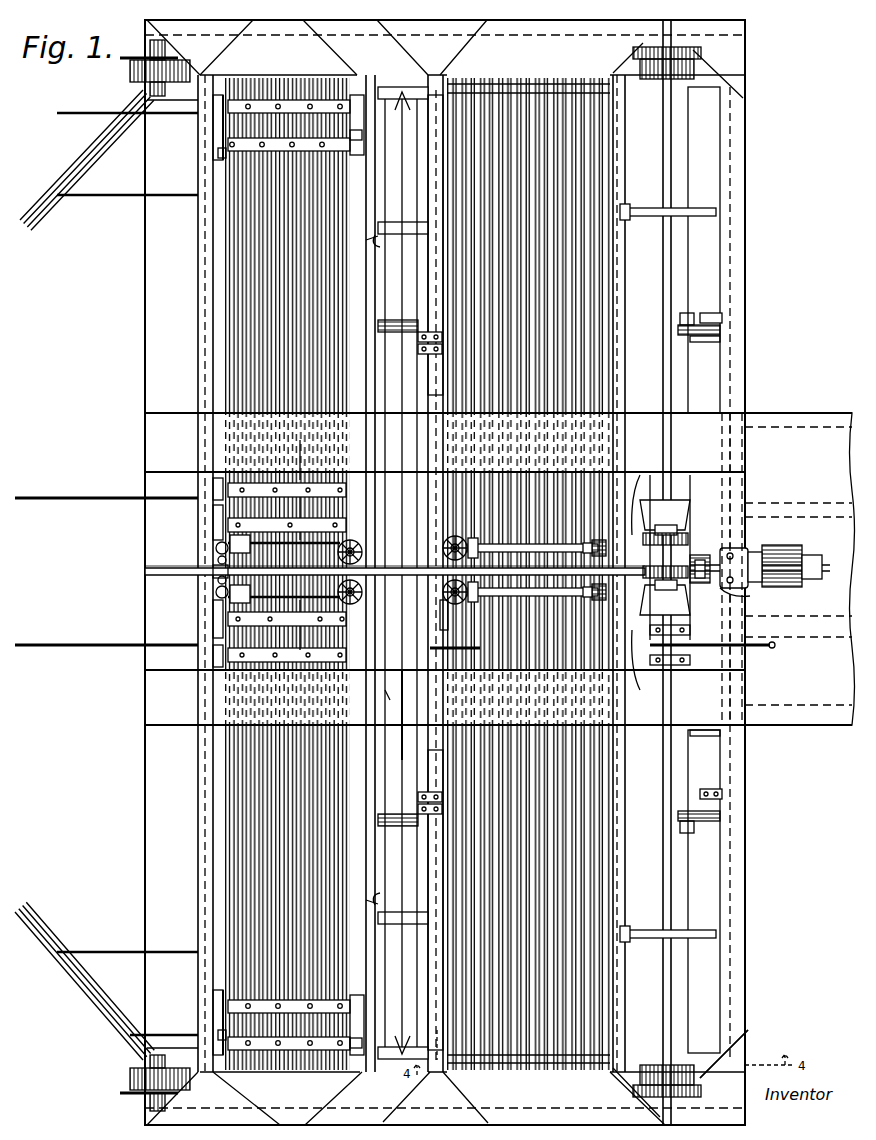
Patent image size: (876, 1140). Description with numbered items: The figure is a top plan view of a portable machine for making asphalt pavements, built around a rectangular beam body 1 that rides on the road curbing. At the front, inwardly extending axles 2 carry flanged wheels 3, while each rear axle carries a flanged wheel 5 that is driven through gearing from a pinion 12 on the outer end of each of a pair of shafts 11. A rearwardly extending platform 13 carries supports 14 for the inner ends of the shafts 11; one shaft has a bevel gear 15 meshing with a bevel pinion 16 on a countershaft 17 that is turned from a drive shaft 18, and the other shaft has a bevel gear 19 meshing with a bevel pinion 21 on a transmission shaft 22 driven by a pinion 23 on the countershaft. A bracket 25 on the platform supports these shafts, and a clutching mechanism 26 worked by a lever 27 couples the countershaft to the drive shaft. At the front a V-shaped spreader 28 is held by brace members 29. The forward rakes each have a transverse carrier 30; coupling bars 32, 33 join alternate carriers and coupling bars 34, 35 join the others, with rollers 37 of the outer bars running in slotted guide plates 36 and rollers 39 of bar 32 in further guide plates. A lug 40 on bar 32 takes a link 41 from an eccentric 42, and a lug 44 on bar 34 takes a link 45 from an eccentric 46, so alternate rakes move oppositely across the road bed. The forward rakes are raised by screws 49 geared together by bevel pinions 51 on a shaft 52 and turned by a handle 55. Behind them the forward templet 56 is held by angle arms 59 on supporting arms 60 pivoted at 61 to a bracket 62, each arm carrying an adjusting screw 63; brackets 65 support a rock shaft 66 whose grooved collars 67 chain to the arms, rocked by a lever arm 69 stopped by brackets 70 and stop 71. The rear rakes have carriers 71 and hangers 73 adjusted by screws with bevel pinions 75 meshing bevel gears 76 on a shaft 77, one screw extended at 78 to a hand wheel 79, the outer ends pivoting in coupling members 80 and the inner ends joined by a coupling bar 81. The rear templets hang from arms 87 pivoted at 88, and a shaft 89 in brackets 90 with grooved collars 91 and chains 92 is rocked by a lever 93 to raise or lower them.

The body 1 is at (205, 300).
The axles 2 is at (150, 55).
The flanged wheels 3 is at (165, 75).
The flanged wheel 5 is at (652, 75).
The shafts 11 is at (663, 300).
The pinion 12 is at (725, 1053).
The platform 13 is at (832, 665).
The supports 14 is at (690, 520).
The bevel gear 15 is at (705, 555).
The bevel pinion 16 is at (712, 560).
The countershaft 17 is at (740, 550).
The drive shaft 18 is at (812, 568).
The bevel gear 19 is at (655, 578).
The bevel pinion 21 is at (650, 533).
The transmission shaft 22 is at (395, 561).
The pinion 23 is at (735, 600).
The bracket 25 is at (765, 590).
The clutching mechanism 26 is at (795, 559).
The lever 27 is at (810, 580).
The spreader 28 is at (75, 160).
The brace members 29 is at (90, 196).
The carrier 30 is at (240, 268).
The coupling bar 32 is at (213, 520).
The coupling bar 33 is at (240, 145).
The coupling bar 34 is at (235, 490).
The coupling bar 35 is at (293, 100).
The slotted guide plates 36 is at (360, 100).
The rollers 37 is at (228, 100).
The rollers 39 is at (216, 548).
The lug 40 is at (235, 538).
The link 41 is at (185, 681).
The eccentric 42 is at (287, 619).
The lug 44 is at (320, 483).
The link 45 is at (287, 574).
The eccentric 46 is at (215, 575).
The screw 49 is at (213, 556).
The bevel pinions 51 is at (213, 568).
The shaft 52 is at (291, 512).
The handle 55 is at (363, 552).
The forward templet 56 is at (405, 87).
The angle arms 59 is at (406, 564).
The supporting arms 60 is at (410, 912).
The pivot 61 is at (405, 240).
The bracket 62 is at (395, 258).
The adjusting screw 63 is at (435, 572).
The brackets 65 is at (415, 350).
The rock shaft 66 is at (410, 728).
The grooved collar 67 is at (405, 320).
The lever arm 69 is at (450, 641).
The brackets 70 is at (382, 697).
The carrier 71 is at (513, 84).
The hangers 73 is at (641, 581).
The bevel pinion 75 is at (595, 570).
The bevel gear 76 is at (592, 548).
The shaft 77 is at (481, 570).
The extension 78 is at (434, 615).
The hand wheel 79 is at (442, 572).
The coupling member 80 is at (540, 90).
The coupling bar 81 is at (533, 570).
The arm 87 is at (640, 208).
The pivot 88 is at (628, 220).
The shaft 89 is at (720, 352).
The brackets 90 is at (722, 794).
The grooved collar 91 is at (720, 315).
The chain 92 is at (680, 330).
The lever 93 is at (772, 650).